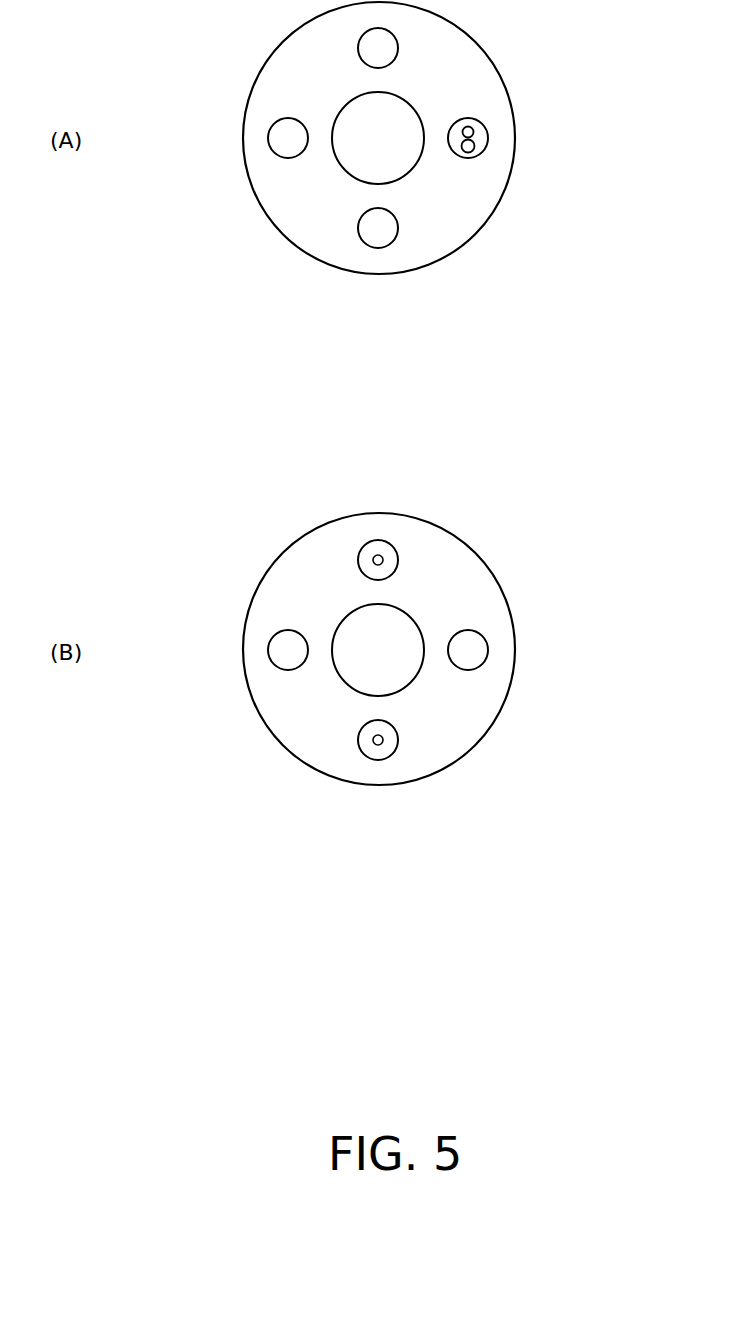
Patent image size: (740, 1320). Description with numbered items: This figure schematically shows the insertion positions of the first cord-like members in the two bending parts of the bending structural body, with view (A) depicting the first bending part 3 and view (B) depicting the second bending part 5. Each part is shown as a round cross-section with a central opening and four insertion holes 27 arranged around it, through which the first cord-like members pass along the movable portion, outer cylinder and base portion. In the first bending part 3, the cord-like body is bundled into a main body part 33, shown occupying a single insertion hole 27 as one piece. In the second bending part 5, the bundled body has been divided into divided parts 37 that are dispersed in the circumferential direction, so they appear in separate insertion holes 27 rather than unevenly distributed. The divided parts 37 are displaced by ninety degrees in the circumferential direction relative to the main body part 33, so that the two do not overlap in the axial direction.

The first bending part 3 is at (444, 147).
The second bending part 5 is at (444, 655).
The insertion hole 27 is at (487, 150).
The main body part 33 is at (477, 135).
The divided part 37 is at (378, 556).